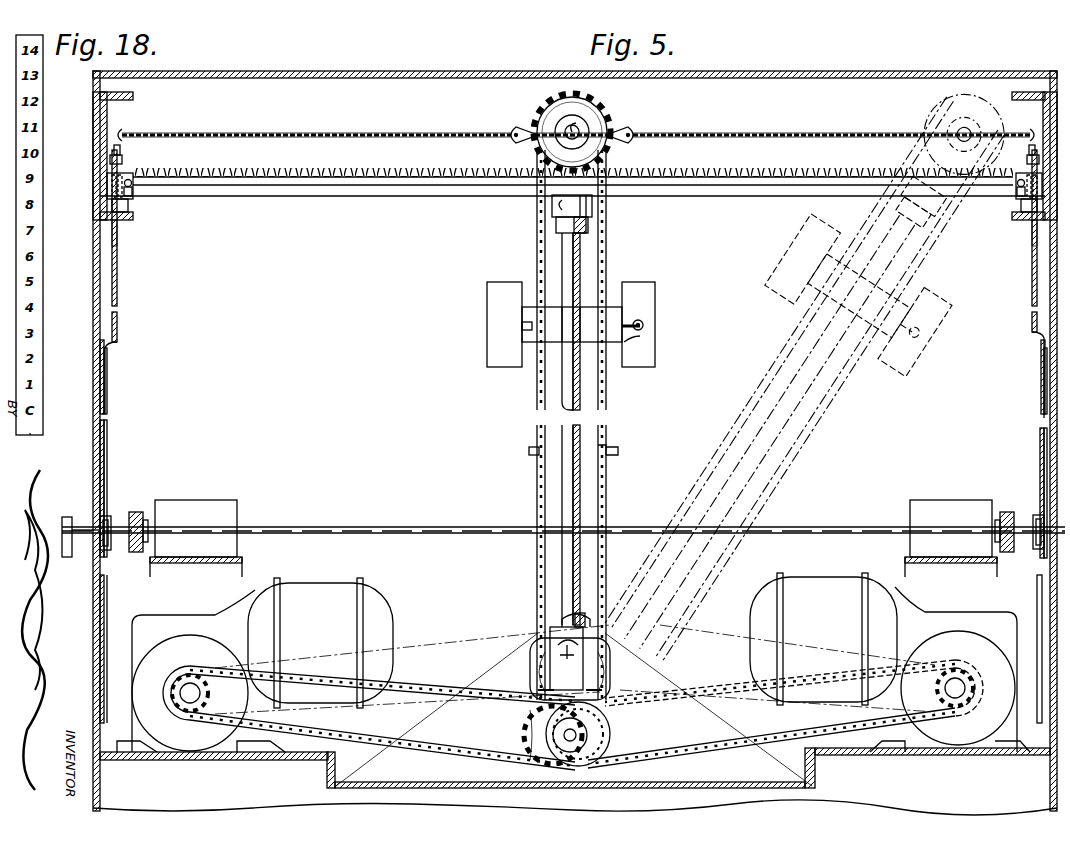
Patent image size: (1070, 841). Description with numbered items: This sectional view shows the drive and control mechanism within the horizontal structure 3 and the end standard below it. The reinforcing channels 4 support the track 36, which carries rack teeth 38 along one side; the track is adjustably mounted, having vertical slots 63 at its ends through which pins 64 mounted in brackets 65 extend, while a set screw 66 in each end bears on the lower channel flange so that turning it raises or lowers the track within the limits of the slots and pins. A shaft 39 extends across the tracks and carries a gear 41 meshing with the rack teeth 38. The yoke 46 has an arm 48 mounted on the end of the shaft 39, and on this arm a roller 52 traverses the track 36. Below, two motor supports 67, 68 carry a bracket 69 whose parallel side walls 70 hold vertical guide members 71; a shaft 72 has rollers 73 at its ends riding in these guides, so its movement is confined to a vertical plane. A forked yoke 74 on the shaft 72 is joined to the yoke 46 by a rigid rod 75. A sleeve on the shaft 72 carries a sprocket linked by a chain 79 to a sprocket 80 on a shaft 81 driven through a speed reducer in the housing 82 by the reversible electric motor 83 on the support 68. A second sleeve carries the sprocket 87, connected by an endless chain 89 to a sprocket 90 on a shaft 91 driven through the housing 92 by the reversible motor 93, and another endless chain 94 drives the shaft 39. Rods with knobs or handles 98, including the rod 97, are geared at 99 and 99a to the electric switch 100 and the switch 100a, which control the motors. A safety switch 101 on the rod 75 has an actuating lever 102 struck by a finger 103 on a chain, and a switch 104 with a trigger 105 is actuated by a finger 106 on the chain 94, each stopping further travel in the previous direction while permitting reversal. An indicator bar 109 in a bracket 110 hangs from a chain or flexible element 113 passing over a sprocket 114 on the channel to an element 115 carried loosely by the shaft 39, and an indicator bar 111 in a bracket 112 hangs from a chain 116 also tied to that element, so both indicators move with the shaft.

In FIG. 5, the horizontal structure 3 is at (396, 72).
In FIG. 5, the reinforcing channels 4 is at (108, 100).
In FIG. 5, the track 36 is at (364, 191).
In FIG. 5, the rack teeth 38 is at (281, 185).
In FIG. 5, the shaft 39 is at (572, 125).
In FIG. 5, the gear 41 is at (594, 116).
In FIG. 5, the yoke 46 is at (594, 210).
In FIG. 5, the yoke arm 48 is at (556, 212).
In FIG. 5, the roller 52 is at (560, 104).
In FIG. 5, the slots 63 is at (130, 178).
In FIG. 5, the pins 64 is at (130, 192).
In FIG. 5, the brackets 65 is at (131, 213).
In FIG. 5, the set screw 66 is at (108, 160).
In FIG. 5, the motor support 67 is at (168, 761).
In FIG. 5, the motor support 68 is at (899, 756).
In FIG. 5, the bracket 69 is at (544, 790).
In FIG. 5, the side walls 70 is at (612, 675).
In FIG. 5, the guide members 71 is at (531, 684).
In FIG. 5, the shaft 72 is at (548, 735).
In FIG. 5, the rollers 73 is at (595, 735).
In FIG. 5, the forked yoke 74 is at (612, 588).
In FIG. 5, the rigid rod 75 is at (583, 395).
In FIG. 5, the chain 79 is at (692, 751).
In FIG. 5, the sprocket 80 is at (936, 690).
In FIG. 5, the shaft 81 is at (955, 680).
In FIG. 5, the housing 82 is at (960, 612).
In FIG. 5, the electric motor 83 is at (830, 582).
In FIG. 5, the sprocket 87 is at (535, 746).
In FIG. 5, the endless chain 89 is at (442, 751).
In FIG. 5, the sprocket 90 is at (207, 692).
In FIG. 5, the shaft 91 is at (178, 690).
In FIG. 5, the housing 92 is at (186, 616).
In FIG. 5, the motor 93 is at (318, 582).
In FIG. 5, the endless chain 94 is at (598, 485).
In FIG. 5, the rod 97 is at (383, 524).
In FIG. 5, the knobs or handles 98 is at (62, 523).
In FIG. 5, the gearing 99 is at (134, 554).
In FIG. 5, the gearing 99a is at (994, 506).
In FIG. 5, the electric switch 100 is at (192, 500).
In FIG. 5, the switch 100a is at (942, 500).
In FIG. 5, the safety switch 101 is at (490, 316).
In FIG. 5, the actuating lever 102 is at (522, 327).
In FIG. 5, the finger 103 is at (530, 451).
In FIG. 5, the switch 104 is at (648, 302).
In FIG. 5, the trigger 105 is at (656, 338).
In FIG. 5, the finger 106 is at (612, 443).
In FIG. 5, the indicator bar 109 is at (118, 448).
In FIG. 5, the bracket 110 is at (110, 518).
In FIG. 18, the indicator bar 111 is at (35, 432).
In FIG. 5, the indicator bar 111 is at (1042, 560).
In FIG. 5, the bracket 112 is at (1035, 518).
In FIG. 5, the chain or flexible element 113 is at (118, 286).
In FIG. 5, the sprocket 114 is at (128, 140).
In FIG. 5, the element 115 is at (522, 127).
In FIG. 5, the chain 116 is at (1030, 303).